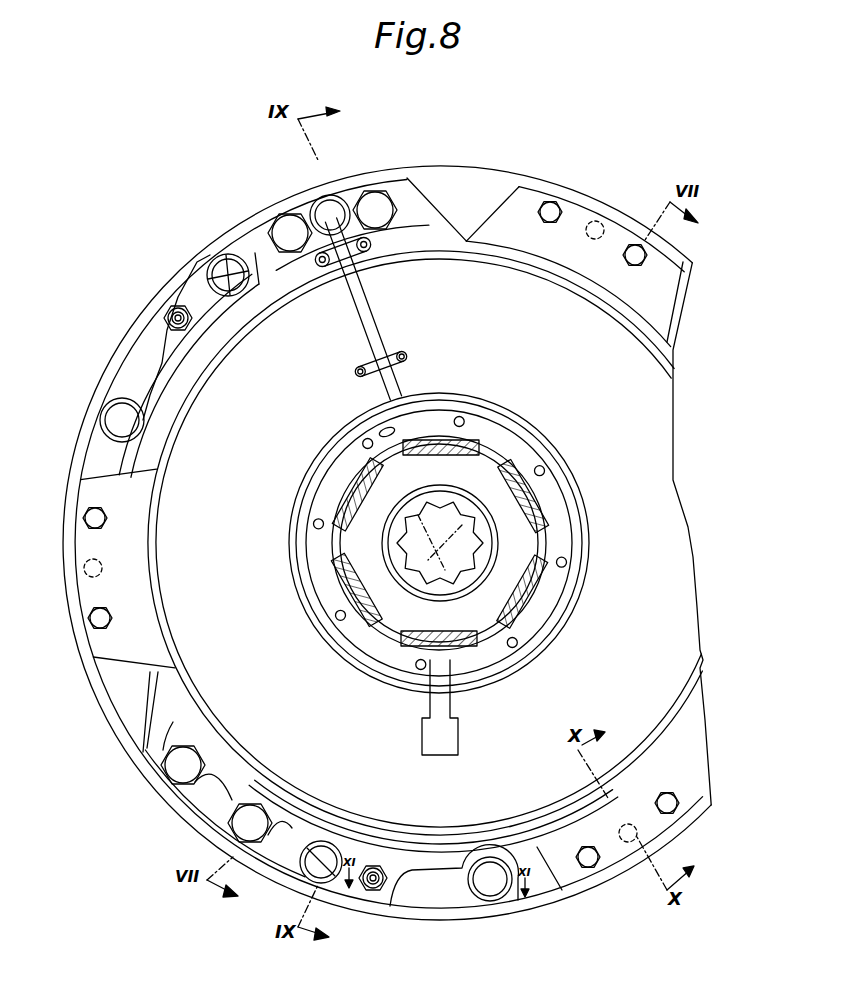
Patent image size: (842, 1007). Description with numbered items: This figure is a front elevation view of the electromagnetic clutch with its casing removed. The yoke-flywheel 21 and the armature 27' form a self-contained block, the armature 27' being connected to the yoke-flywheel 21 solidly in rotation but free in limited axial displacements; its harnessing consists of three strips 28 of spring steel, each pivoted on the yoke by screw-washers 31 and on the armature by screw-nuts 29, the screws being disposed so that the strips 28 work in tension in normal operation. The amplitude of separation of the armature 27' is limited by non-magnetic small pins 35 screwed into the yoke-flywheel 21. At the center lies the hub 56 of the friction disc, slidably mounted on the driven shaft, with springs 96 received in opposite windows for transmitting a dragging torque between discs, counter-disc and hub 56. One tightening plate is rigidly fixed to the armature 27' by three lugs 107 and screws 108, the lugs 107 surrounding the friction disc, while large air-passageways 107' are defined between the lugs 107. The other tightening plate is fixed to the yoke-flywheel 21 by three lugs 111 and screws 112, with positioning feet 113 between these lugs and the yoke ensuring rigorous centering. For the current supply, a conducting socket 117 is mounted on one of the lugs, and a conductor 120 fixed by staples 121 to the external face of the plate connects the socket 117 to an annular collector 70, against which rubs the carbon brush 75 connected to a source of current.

The yoke-flywheel 21 is at (520, 907).
The armature 27' is at (321, 605).
The strip 28 is at (137, 368).
The screw-nut 29 is at (178, 305).
The screw-washer 31 is at (115, 410).
The small pin 35 is at (232, 256).
The hub 56 is at (440, 543).
The collecting ring 70 is at (550, 553).
The carbon brush 75 is at (437, 697).
The spring 96 is at (462, 453).
The lug 107 is at (283, 505).
The air-passageway 107' is at (295, 488).
The screw 108 is at (360, 203).
The lug 111 is at (572, 212).
The screw 112 is at (100, 520).
The positioning foot 113 is at (105, 568).
The conducting socket 117 is at (331, 200).
The conductor 120 is at (362, 303).
The staple 121 is at (330, 270).